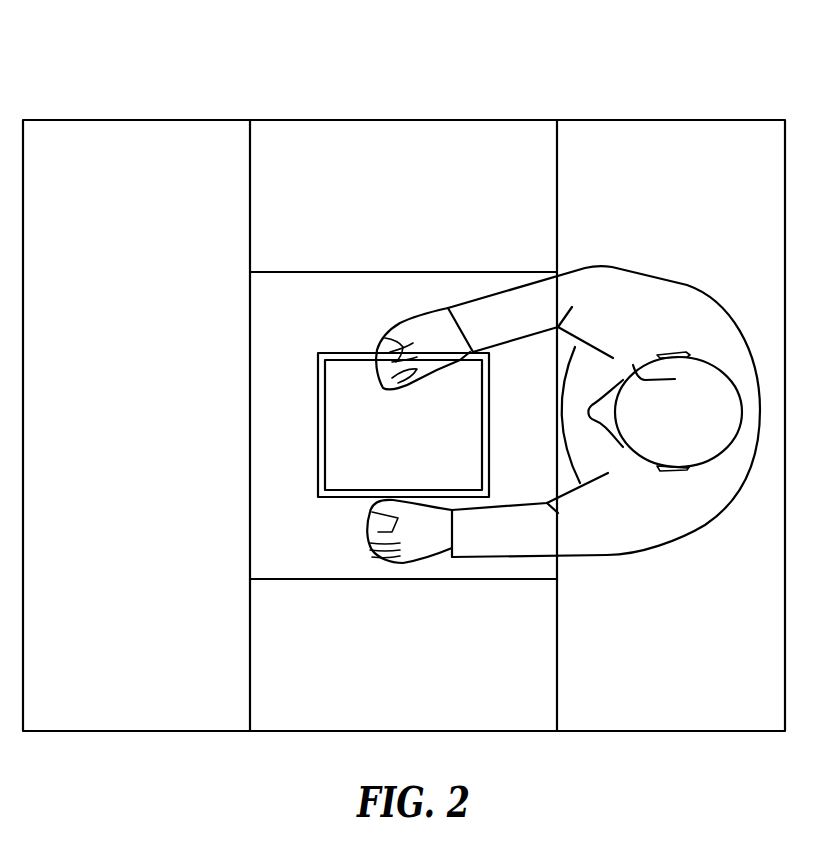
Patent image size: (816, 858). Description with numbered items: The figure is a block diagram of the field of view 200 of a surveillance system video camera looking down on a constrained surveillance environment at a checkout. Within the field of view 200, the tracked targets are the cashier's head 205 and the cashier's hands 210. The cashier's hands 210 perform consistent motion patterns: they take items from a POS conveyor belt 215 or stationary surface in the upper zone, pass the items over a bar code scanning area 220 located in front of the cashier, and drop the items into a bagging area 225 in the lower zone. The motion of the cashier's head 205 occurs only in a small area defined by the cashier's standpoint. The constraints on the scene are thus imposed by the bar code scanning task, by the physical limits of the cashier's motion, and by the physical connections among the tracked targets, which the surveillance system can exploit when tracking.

The field of view 200 is at (108, 52).
The cashier's head 205 is at (636, 276).
The cashier's hands 210 is at (415, 532).
The POS conveyor belt 215 is at (272, 203).
The bar code scanning area 220 is at (342, 432).
The bagging area 225 is at (272, 658).